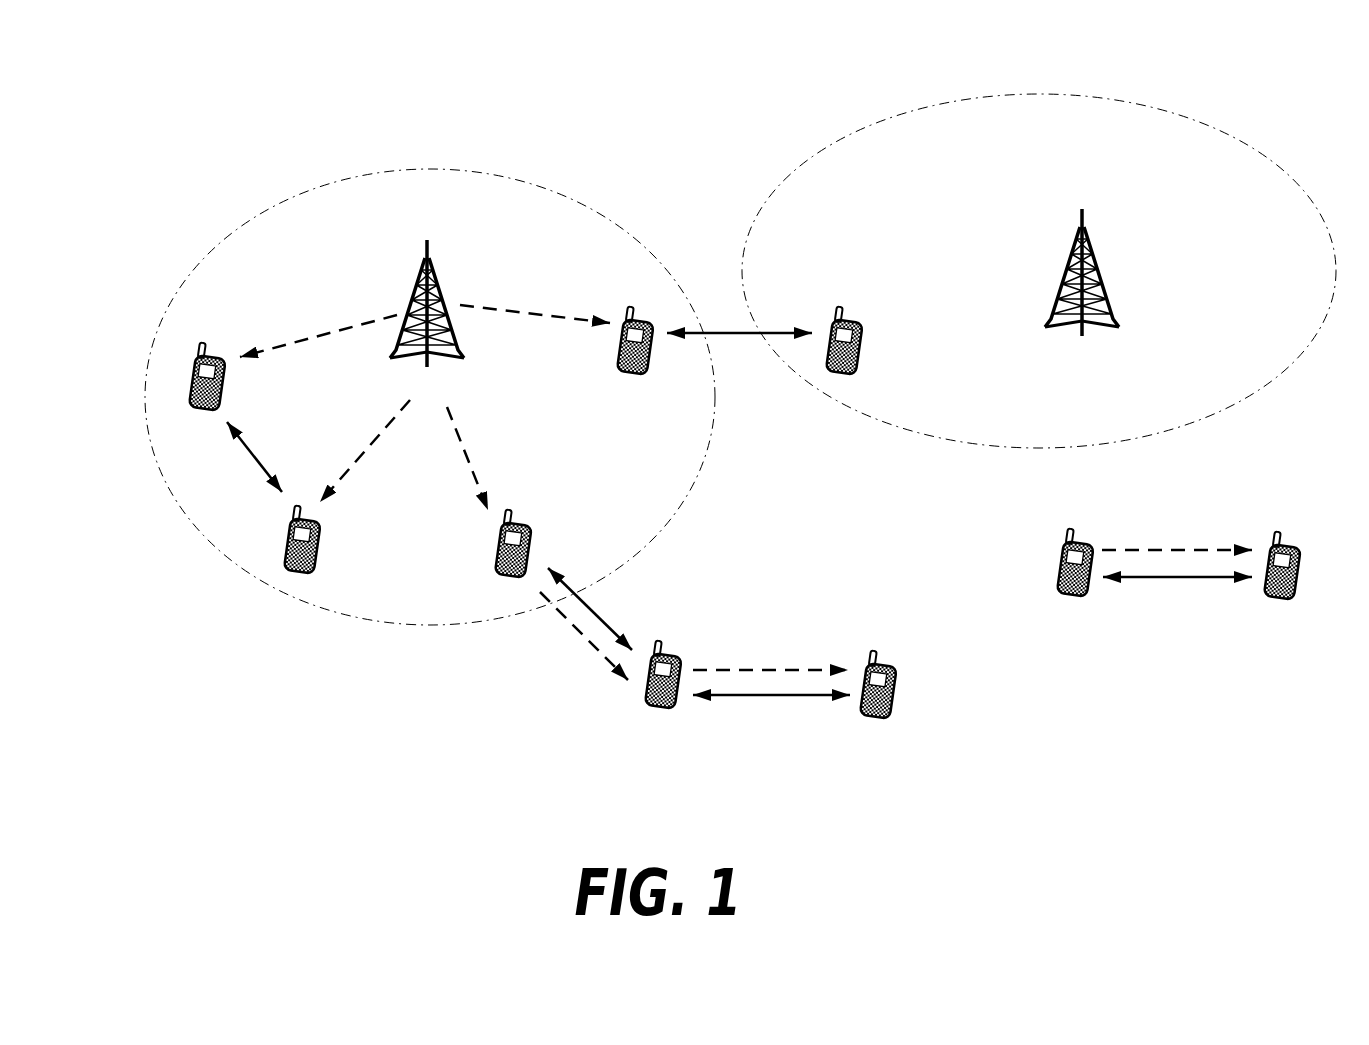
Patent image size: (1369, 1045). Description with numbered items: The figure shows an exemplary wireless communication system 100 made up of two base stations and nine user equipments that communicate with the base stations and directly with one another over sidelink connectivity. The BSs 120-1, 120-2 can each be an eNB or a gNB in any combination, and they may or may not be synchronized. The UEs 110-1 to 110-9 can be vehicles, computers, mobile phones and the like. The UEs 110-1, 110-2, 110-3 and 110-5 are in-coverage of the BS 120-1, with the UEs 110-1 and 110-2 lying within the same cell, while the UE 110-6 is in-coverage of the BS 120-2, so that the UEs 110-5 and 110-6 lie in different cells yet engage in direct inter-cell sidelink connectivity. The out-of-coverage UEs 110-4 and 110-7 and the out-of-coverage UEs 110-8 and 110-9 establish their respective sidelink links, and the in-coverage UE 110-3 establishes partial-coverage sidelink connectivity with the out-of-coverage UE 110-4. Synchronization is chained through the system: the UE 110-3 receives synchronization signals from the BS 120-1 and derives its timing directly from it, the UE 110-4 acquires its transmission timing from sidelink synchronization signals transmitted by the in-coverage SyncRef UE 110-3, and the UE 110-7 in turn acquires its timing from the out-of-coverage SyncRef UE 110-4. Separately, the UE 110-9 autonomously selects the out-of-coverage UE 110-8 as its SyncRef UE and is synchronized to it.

The wireless communication system 100 is at (263, 143).
The UE 110-1 is at (207, 333).
The UE 110-2 is at (333, 537).
The UE 110-3 is at (535, 518).
The UE 110-4 is at (662, 633).
The UE 110-5 is at (647, 307).
The UE 110-6 is at (867, 300).
The UE 110-7 is at (887, 653).
The UE 110-8 is at (1083, 610).
The UE 110-9 is at (1275, 612).
The BS 120-1 is at (440, 262).
The BS 120-2 is at (1113, 275).